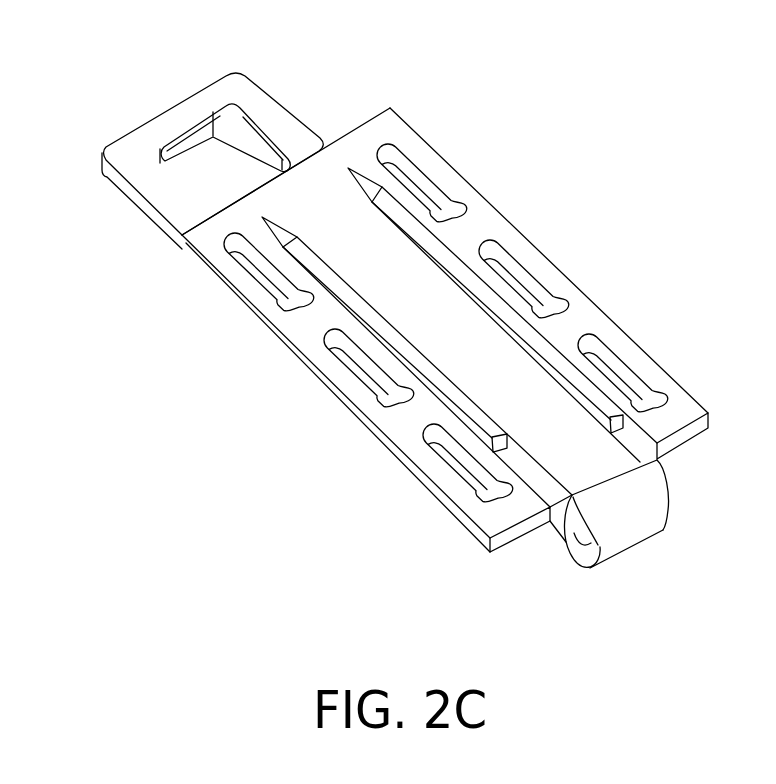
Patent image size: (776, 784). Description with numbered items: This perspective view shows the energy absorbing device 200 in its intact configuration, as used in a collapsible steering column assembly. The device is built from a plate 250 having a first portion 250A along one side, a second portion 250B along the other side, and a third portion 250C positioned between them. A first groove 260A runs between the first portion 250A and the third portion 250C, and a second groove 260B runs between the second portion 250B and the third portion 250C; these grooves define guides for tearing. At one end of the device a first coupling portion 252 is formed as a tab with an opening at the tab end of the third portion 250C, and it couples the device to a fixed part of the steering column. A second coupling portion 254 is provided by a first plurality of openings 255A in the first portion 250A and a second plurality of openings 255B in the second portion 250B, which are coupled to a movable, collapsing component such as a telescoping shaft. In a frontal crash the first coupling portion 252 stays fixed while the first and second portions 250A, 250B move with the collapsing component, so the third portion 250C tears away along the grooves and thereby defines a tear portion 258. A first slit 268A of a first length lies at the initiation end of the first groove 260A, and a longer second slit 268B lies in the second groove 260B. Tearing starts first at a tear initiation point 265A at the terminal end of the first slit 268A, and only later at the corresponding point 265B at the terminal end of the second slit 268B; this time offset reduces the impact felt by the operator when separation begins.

The energy absorbing device 200 is at (213, 46).
The plate 250 is at (317, 223).
The first coupling portion 252 is at (257, 76).
The third portion 250C is at (258, 186).
The guide rail 254 is at (196, 244).
The first plurality of openings 255A is at (283, 295).
The second plurality of openings 255B is at (428, 184).
The first portion 250A is at (308, 332).
The second portion 250B is at (480, 233).
The first groove 260A is at (435, 393).
The second groove 260B is at (529, 330).
The tear initiation point 265A is at (485, 470).
The second lip end 265B is at (625, 407).
The first slit 268A is at (527, 492).
The second slit 268B is at (650, 443).
The tear portion 258 is at (608, 578).